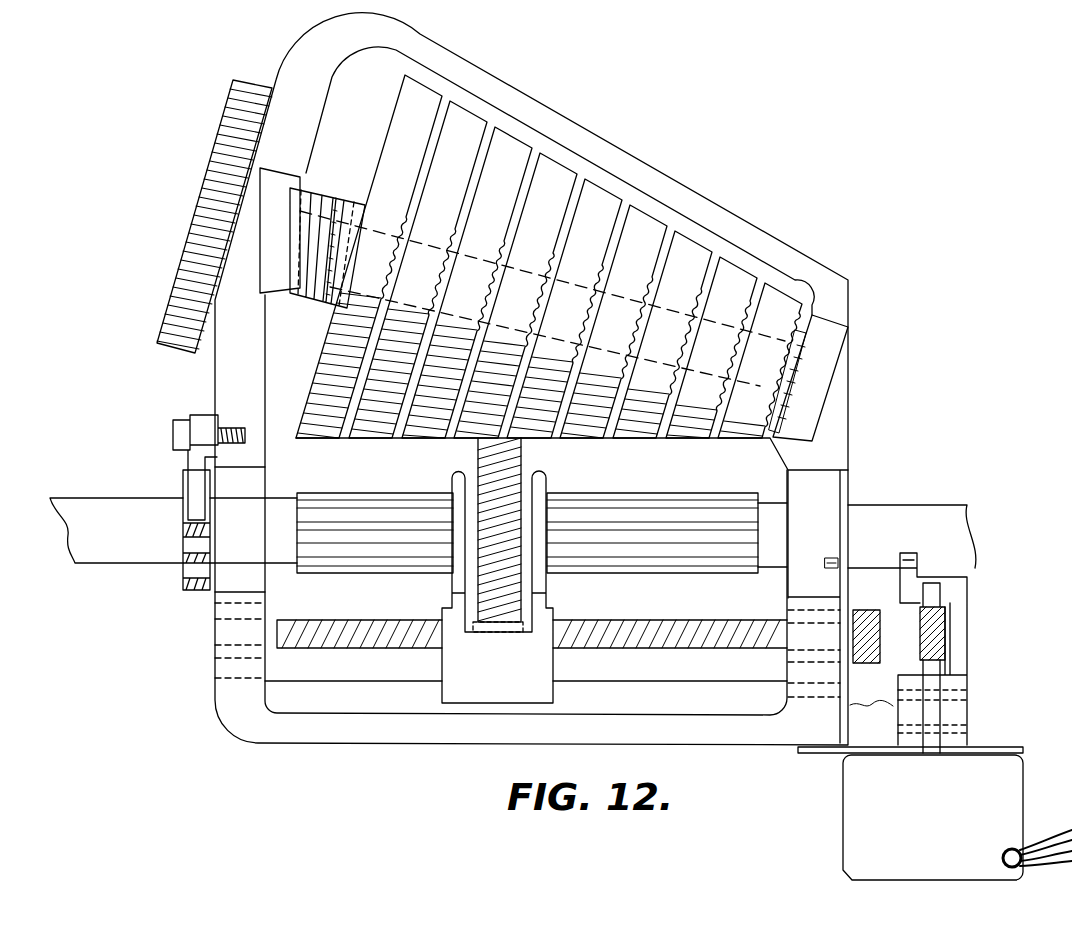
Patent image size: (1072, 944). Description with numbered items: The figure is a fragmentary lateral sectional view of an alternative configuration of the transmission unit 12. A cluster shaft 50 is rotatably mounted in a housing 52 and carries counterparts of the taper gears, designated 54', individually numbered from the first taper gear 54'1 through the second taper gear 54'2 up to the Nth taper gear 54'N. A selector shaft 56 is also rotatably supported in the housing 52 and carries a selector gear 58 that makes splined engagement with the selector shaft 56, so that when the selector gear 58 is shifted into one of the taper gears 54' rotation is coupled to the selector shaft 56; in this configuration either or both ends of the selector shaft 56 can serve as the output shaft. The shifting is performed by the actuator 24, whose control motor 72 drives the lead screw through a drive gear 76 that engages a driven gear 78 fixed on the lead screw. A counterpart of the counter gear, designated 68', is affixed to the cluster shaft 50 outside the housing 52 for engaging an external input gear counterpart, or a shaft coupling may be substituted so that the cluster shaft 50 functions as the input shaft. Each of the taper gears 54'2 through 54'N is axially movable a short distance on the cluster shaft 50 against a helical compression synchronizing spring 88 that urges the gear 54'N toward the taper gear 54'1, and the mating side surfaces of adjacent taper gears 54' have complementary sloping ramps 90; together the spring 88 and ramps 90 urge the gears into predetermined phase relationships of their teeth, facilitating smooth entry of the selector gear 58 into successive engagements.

The transmission unit 12 is at (440, 757).
The actuator 24 is at (967, 650).
The cluster shaft 50 is at (437, 255).
The housing 52 is at (215, 385).
The taper gears 54' is at (568, 256).
The Nth taper gear 54'N is at (369, 256).
The second taper gear 54'2 is at (723, 313).
The first taper gear 54'1 is at (779, 333).
The selector shaft 56 is at (383, 493).
The selector gear 58 is at (522, 466).
The counter gear 68' is at (188, 216).
The control motor 72 is at (915, 793).
The drive gear 76 is at (946, 622).
The driven gear 78 is at (880, 608).
The helical compression synchronizing spring 88 is at (350, 160).
The sloping ramps 90 is at (508, 240).